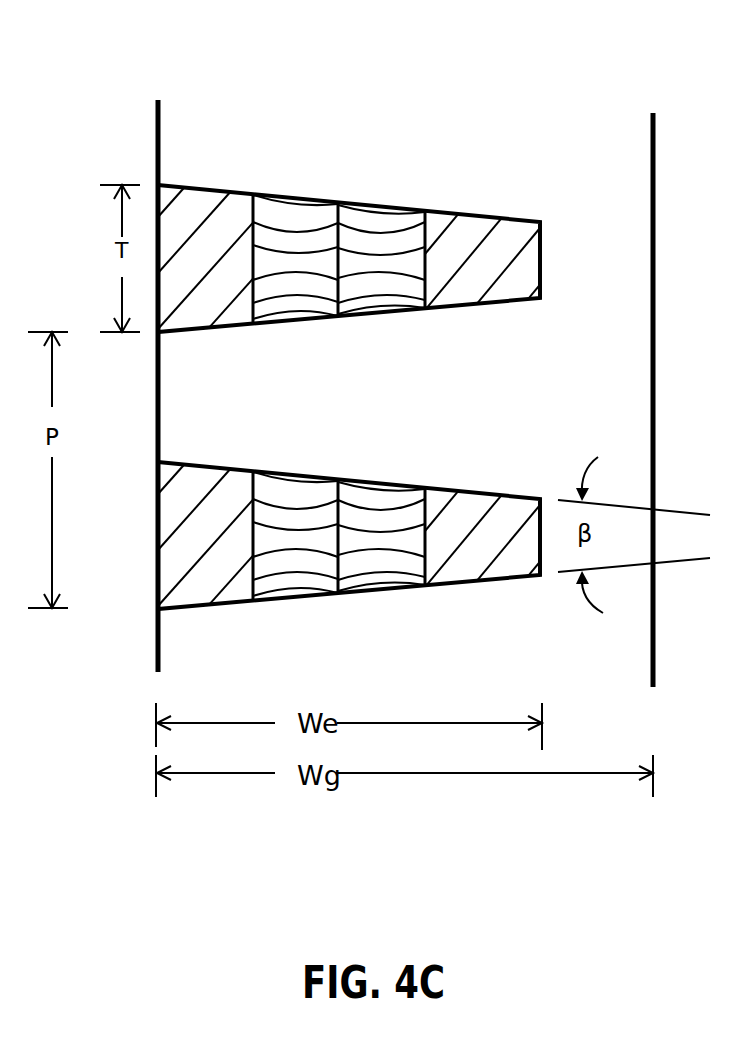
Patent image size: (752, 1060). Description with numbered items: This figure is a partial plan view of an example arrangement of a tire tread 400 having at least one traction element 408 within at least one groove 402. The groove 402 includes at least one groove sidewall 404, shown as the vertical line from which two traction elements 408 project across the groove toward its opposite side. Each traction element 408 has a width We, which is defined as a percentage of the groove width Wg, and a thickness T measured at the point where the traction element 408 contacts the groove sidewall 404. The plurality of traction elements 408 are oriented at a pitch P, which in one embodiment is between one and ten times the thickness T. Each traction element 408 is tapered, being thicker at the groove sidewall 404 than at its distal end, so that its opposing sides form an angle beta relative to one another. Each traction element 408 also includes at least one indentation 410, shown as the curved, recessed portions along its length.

The tire tread 400 is at (238, 68).
The groove 402 is at (404, 142).
The groove sidewall 404 is at (160, 382).
The traction element 408 is at (510, 243).
The indentation 410 is at (339, 494).